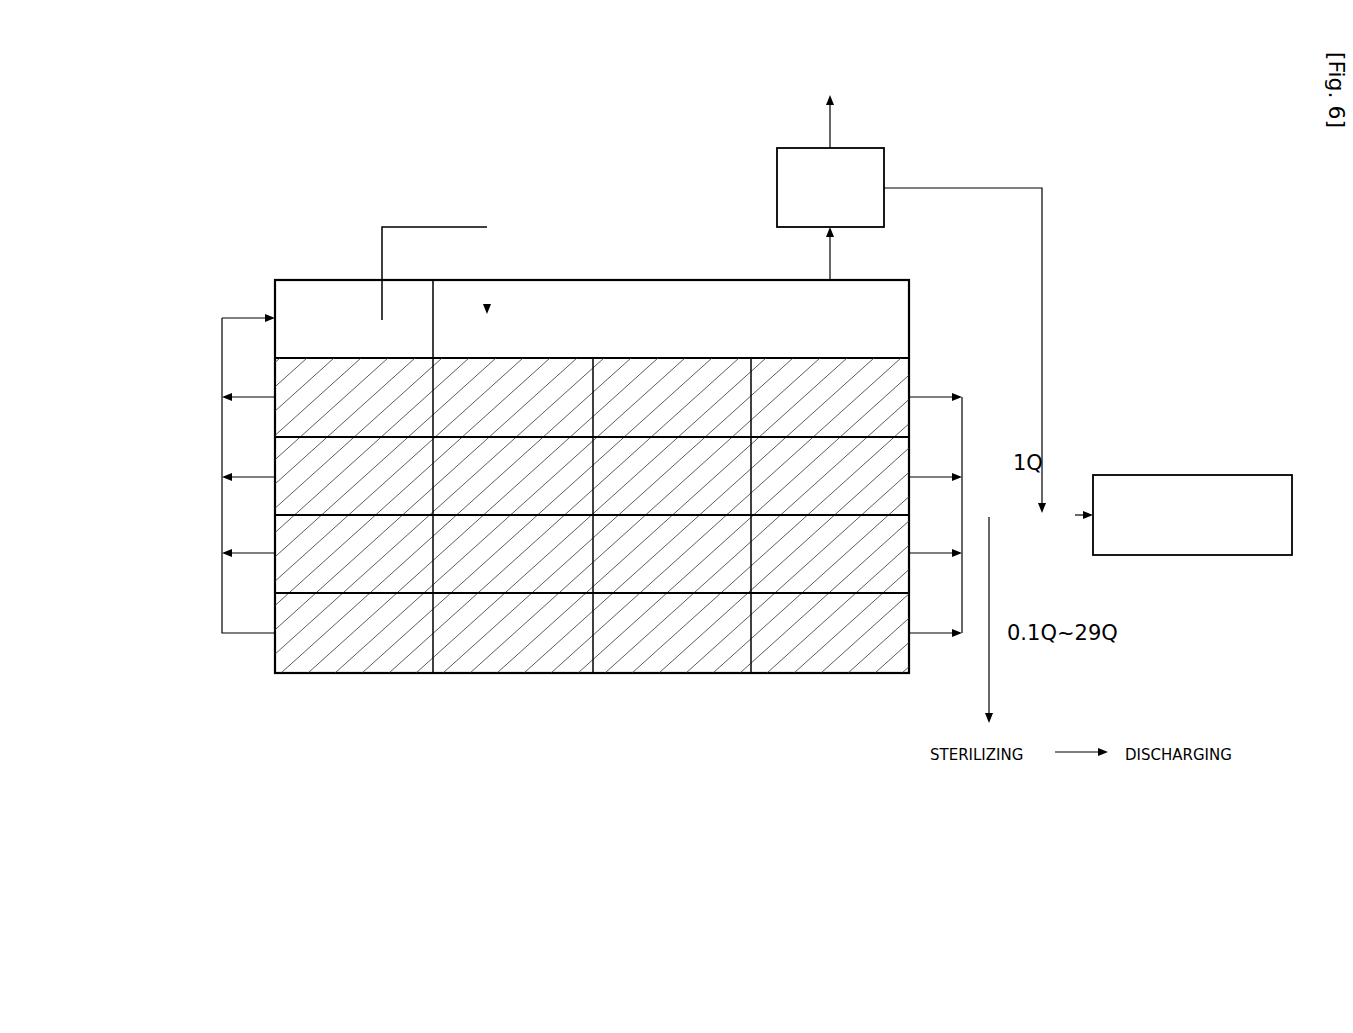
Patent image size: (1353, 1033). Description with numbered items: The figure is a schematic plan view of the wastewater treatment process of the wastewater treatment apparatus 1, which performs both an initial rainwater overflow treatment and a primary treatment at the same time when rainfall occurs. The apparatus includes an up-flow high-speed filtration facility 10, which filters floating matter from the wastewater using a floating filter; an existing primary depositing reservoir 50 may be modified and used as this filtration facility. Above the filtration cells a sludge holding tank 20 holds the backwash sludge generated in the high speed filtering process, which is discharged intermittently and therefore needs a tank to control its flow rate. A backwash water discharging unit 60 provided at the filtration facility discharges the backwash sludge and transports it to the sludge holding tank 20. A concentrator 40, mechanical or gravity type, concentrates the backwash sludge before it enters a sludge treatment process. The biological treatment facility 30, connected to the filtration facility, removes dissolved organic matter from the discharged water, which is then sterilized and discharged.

The wastewater treatment apparatus 1 is at (278, 220).
The up-flow high-speed filtration facility 10 is at (683, 655).
The sludge holding tank 20 is at (641, 308).
The biological treatment facility 30 is at (1193, 495).
The concentrator 40 is at (845, 167).
The primary depositing reservoir 50 is at (472, 674).
The backwash water discharging unit 60 is at (220, 600).